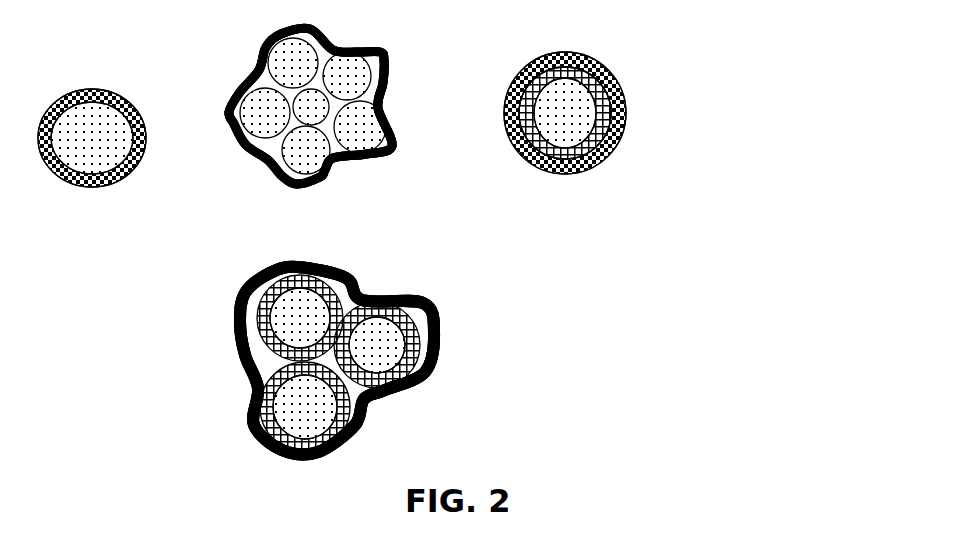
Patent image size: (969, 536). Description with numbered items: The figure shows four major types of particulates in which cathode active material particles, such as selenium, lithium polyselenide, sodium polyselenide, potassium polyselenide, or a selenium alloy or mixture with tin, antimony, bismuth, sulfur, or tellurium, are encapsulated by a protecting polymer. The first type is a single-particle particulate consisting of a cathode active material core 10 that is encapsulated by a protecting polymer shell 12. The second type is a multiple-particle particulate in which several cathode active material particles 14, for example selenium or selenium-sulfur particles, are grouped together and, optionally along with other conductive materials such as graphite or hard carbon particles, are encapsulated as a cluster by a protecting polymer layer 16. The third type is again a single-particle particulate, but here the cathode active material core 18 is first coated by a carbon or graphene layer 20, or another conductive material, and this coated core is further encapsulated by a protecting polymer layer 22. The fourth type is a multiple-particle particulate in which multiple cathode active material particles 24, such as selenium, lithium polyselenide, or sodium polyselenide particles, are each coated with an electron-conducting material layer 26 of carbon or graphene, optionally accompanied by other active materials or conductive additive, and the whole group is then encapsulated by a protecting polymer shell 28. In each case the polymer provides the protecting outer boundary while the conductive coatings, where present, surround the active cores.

The cathode active material core 10 is at (115, 140).
The protecting polymer shell 12 is at (80, 183).
The cathode active material particles 14 is at (252, 123).
The protecting polymer layer 16 is at (241, 150).
The cathode active material core 18 is at (548, 122).
The carbon or graphene layer 20 is at (548, 170).
The protecting polymer layer 22 is at (623, 88).
The cathode active material particles 24 is at (372, 347).
The electron-conducting material layer 26 is at (367, 402).
The protecting polymer shell 28 is at (391, 361).